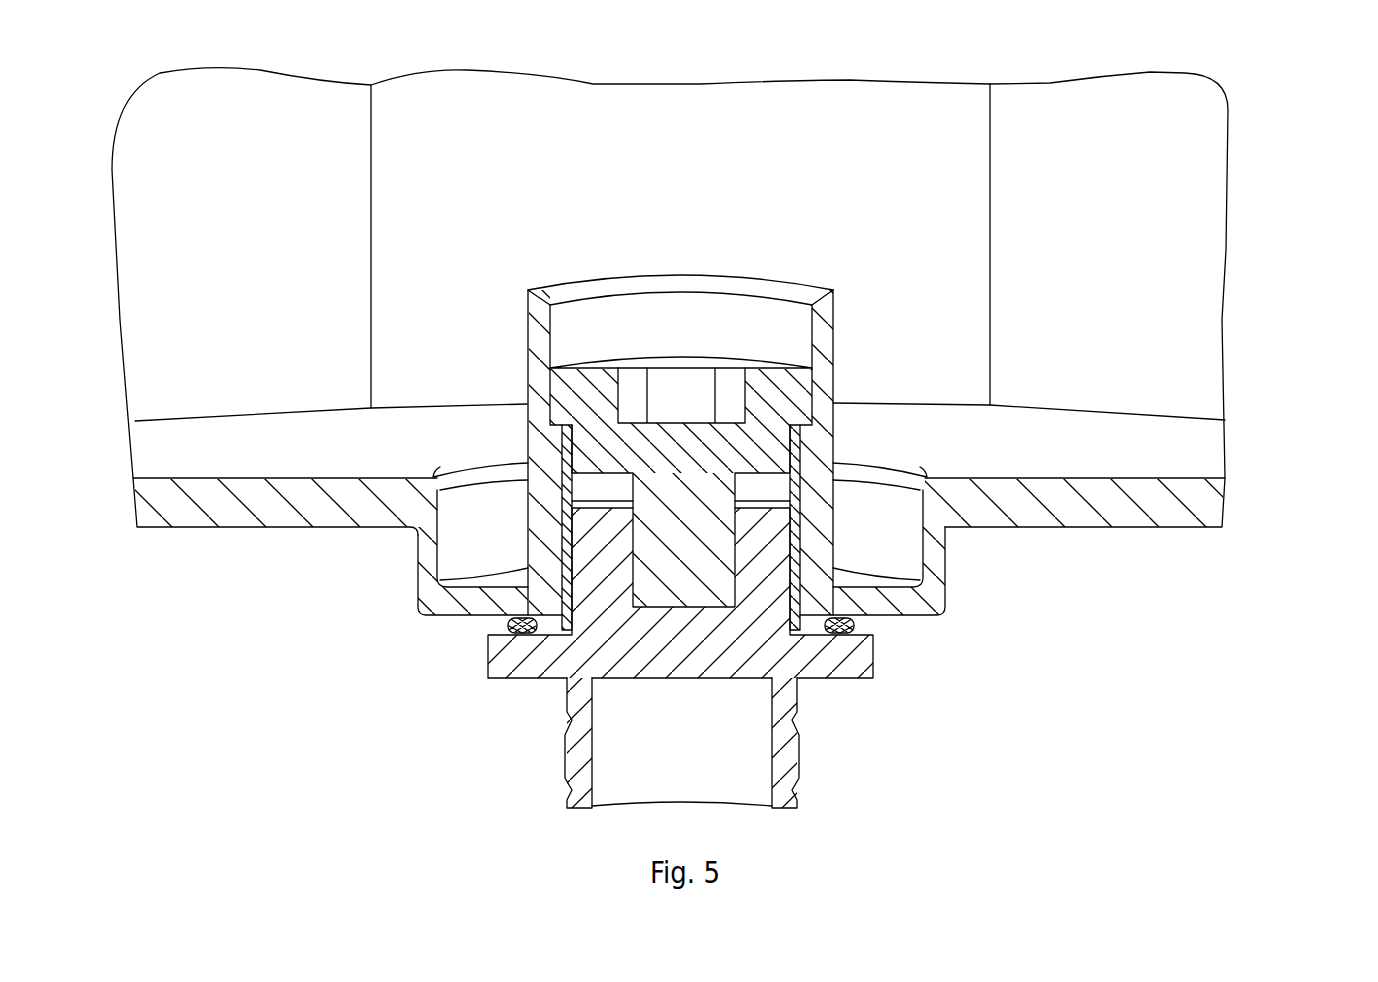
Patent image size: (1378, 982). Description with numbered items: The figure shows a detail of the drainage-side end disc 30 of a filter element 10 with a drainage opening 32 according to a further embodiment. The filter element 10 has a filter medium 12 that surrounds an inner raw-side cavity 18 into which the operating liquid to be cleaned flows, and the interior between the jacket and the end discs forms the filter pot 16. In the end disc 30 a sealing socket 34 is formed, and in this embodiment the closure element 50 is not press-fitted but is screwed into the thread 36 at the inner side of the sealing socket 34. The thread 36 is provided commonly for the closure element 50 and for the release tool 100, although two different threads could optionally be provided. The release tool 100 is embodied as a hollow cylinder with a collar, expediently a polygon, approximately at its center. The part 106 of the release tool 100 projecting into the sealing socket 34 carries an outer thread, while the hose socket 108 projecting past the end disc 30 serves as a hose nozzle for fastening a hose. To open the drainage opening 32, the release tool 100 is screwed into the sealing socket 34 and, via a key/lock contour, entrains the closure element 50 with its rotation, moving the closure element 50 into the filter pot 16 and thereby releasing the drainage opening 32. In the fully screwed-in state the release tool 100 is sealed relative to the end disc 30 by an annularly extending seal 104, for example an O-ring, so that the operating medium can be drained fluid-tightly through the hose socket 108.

The filter element 10 is at (1275, 176).
The filter medium 12 is at (321, 130).
The filter pot 16 is at (1170, 288).
The inner raw-side cavity 18 is at (710, 170).
The drainage-side end disc 30 is at (1170, 512).
The drainage opening 32 is at (518, 700).
The sealing socket 34 is at (823, 312).
The thread 36 is at (528, 490).
The closure element 50 is at (598, 397).
The release tool 100 is at (789, 654).
The annularly extending seal 104 is at (856, 624).
The part of the release tool projecting into the sealing socket 106 is at (780, 538).
The hose socket 108 is at (729, 743).